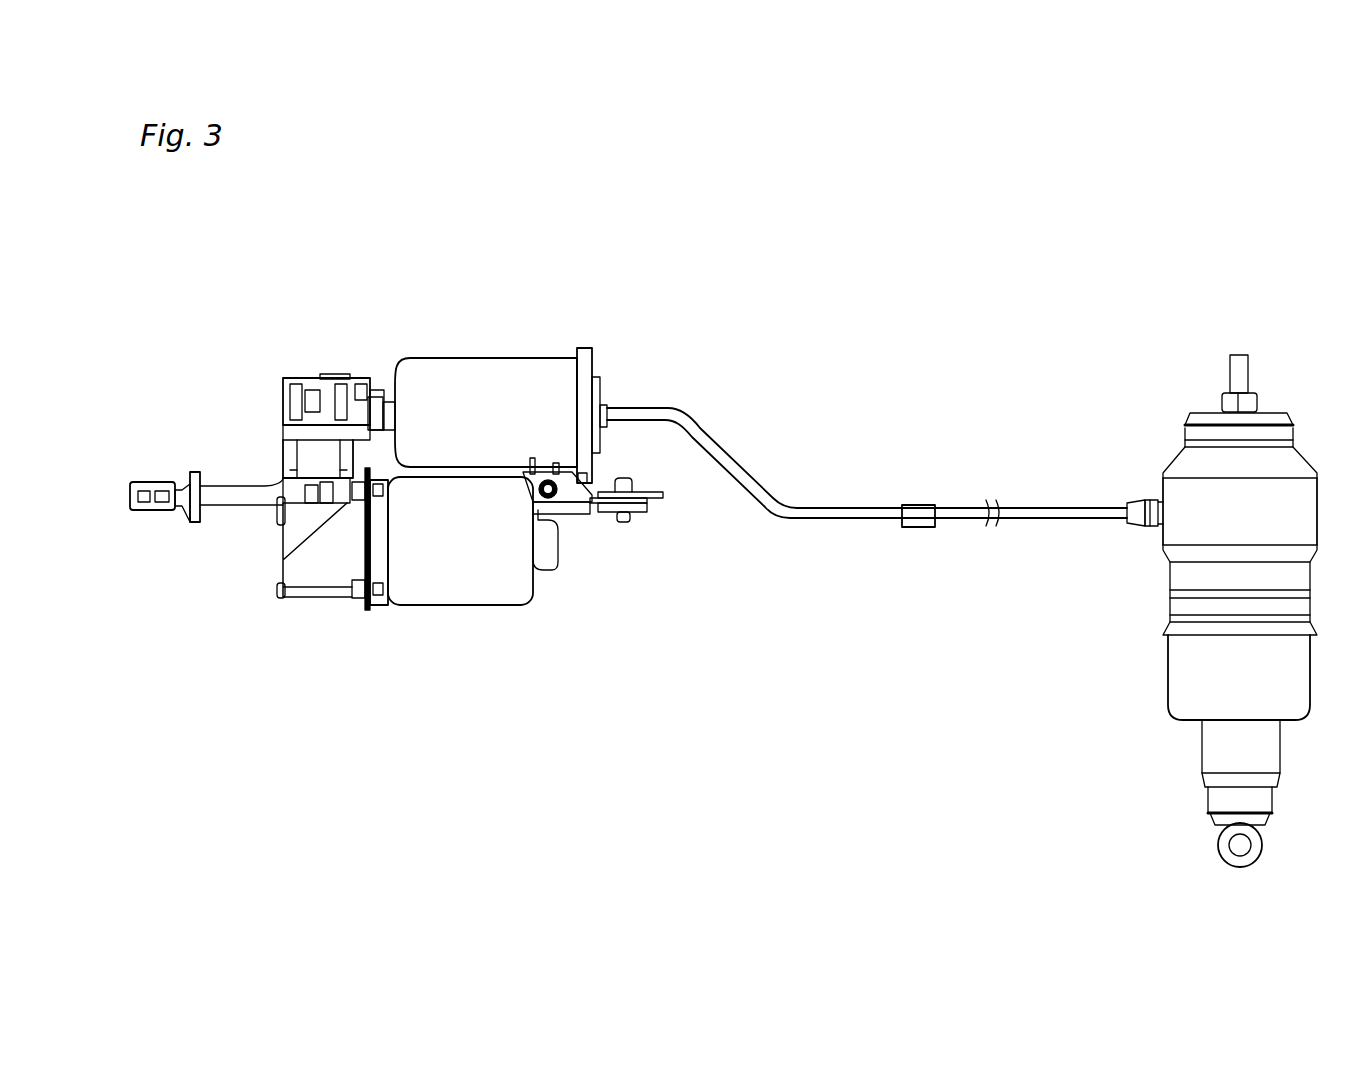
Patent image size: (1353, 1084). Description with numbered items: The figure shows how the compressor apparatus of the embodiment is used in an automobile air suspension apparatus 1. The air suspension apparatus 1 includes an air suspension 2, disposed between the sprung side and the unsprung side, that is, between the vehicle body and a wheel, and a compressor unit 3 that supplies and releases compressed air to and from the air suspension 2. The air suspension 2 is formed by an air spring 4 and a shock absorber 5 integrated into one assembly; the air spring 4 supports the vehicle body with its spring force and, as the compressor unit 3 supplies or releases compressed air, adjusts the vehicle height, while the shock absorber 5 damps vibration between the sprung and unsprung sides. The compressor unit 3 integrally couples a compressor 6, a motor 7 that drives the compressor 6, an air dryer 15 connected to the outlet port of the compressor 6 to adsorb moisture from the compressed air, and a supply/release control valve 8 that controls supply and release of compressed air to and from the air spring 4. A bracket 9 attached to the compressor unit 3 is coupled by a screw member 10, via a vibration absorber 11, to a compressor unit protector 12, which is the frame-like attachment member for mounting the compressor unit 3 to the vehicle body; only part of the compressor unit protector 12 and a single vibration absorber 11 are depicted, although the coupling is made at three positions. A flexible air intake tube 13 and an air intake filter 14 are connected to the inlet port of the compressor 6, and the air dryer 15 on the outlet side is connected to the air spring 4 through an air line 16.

The air suspension apparatus 1 is at (714, 223).
The air suspension 2 is at (1172, 375).
The compressor unit 3 is at (557, 312).
The air spring 4 is at (1204, 510).
The shock absorber 5 is at (1215, 748).
The compressor 6 is at (318, 460).
The motor 7 is at (460, 602).
The supply/release control valve 8 is at (333, 375).
The bracket 9 is at (592, 500).
The screw member 10 is at (636, 481).
The vibration absorber 11 is at (648, 504).
The compressor unit protector 12 is at (660, 492).
The air intake tube 13 is at (218, 512).
The air intake filter 14 is at (130, 512).
The air dryer 15 is at (484, 400).
The air line 16 is at (946, 504).